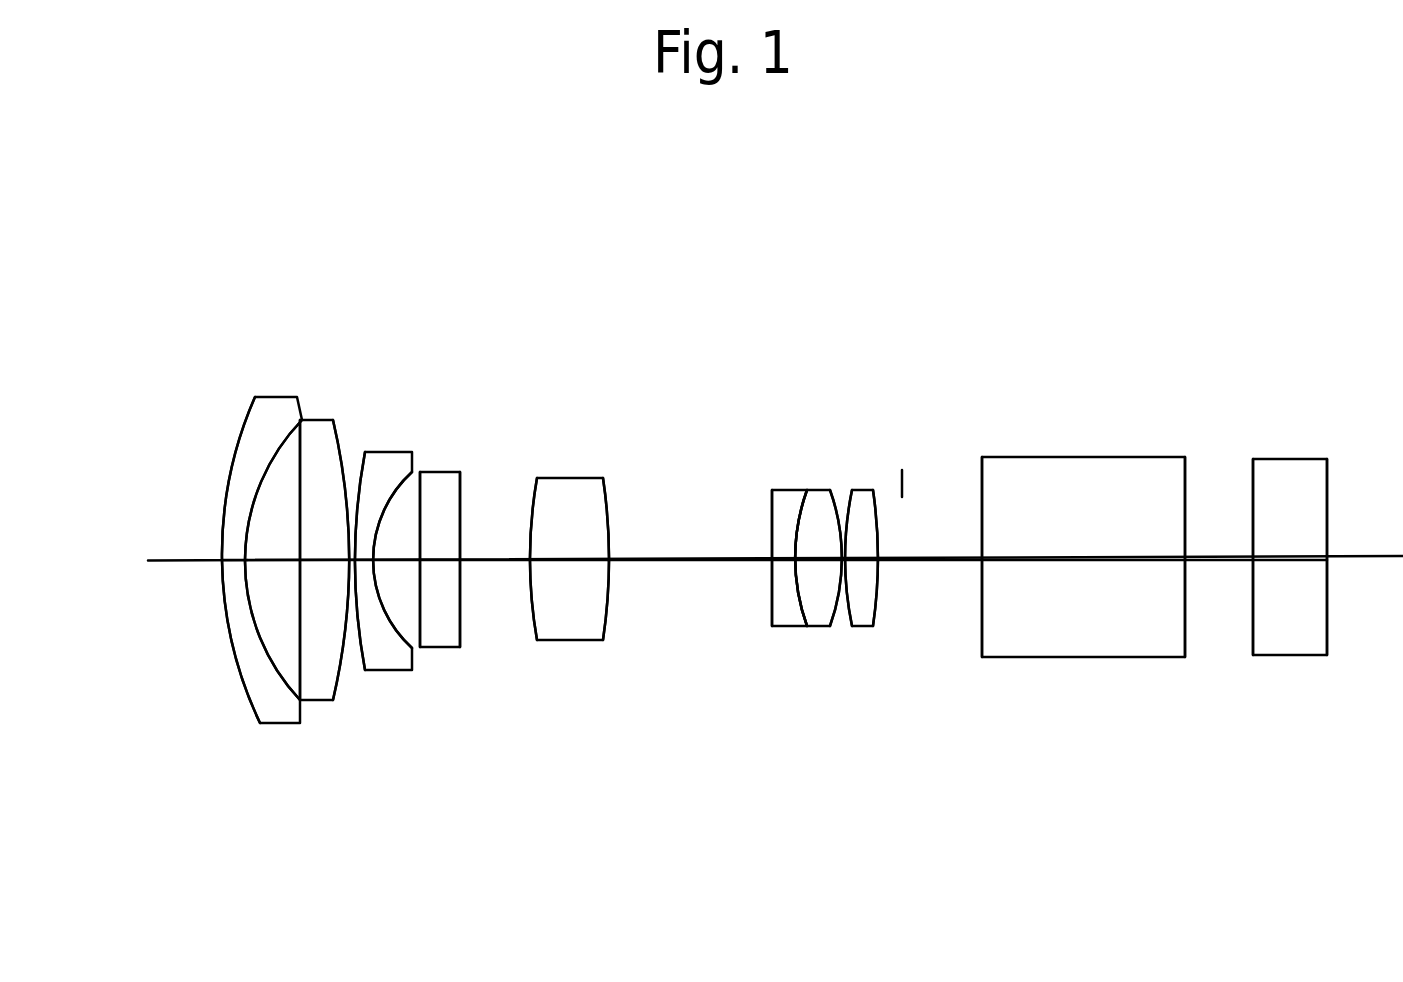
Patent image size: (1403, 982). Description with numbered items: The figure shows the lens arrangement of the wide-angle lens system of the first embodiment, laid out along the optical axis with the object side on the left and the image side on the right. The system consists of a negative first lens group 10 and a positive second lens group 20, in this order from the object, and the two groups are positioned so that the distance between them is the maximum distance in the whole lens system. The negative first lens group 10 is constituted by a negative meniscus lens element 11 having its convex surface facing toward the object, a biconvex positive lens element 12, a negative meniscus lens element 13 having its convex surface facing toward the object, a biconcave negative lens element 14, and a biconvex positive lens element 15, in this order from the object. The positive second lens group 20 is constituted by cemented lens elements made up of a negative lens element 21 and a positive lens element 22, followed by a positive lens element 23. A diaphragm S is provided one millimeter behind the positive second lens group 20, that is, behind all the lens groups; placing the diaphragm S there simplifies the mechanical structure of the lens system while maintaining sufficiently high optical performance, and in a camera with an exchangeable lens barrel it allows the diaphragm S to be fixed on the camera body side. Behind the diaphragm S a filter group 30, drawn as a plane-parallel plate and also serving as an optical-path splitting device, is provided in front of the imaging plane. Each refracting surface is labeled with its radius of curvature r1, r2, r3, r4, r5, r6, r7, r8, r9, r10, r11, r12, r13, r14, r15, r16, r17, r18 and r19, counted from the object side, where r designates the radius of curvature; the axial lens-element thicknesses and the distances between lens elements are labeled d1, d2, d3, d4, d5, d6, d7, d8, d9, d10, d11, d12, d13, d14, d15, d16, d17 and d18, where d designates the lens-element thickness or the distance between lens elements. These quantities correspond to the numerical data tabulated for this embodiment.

The negative first lens group 10 is at (670, 253).
The positive second lens group 20 is at (1075, 253).
The filter group 30 is at (1363, 242).
The negative meniscus lens element 11 is at (243, 488).
The biconvex positive lens element 12 is at (329, 532).
The negative meniscus lens element 13 is at (382, 486).
The biconcave negative lens element 14 is at (440, 537).
The biconvex positive lens element 15 is at (583, 522).
The negative lens element 21 is at (784, 535).
The positive lens element 22 is at (813, 510).
The positive lens element 23 is at (857, 533).
The diaphragm S is at (905, 490).
The radius of curvature r1 is at (255, 397).
The radius of curvature r2 is at (298, 397).
The radius of curvature r3 is at (300, 417).
The radius of curvature r4 is at (330, 422).
The radius of curvature r5 is at (363, 452).
The radius of curvature r6 is at (412, 452).
The radius of curvature r7 is at (420, 472).
The radius of curvature r8 is at (460, 472).
The radius of curvature r9 is at (537, 477).
The radius of curvature r10 is at (603, 477).
The radius of curvature r11 is at (772, 490).
The radius of curvature r12 is at (807, 490).
The radius of curvature r13 is at (830, 490).
The radius of curvature r14 is at (853, 490).
The radius of curvature r15 is at (873, 490).
The radius of curvature r16 is at (982, 457).
The radius of curvature r17 is at (1185, 457).
The radius of curvature r18 is at (1253, 459).
The radius of curvature r19 is at (1327, 459).
The lens-element thickness d1 is at (223, 560).
The distance between lens elements d2 is at (255, 560).
The lens-element thickness d3 is at (320, 560).
The distance between lens elements d4 is at (352, 560).
The lens-element thickness d5 is at (364, 560).
The distance between lens elements d6 is at (397, 560).
The lens-element thickness d7 is at (425, 560).
The distance between lens elements d8 is at (493, 560).
The lens-element thickness d9 is at (573, 560).
The distance between lens elements d10 is at (686, 560).
The lens-element thickness d11 is at (783, 560).
The lens-element thickness d12 is at (807, 560).
The distance between lens elements d13 is at (843, 560).
The lens-element thickness d14 is at (860, 560).
The distance between lens elements d15 is at (930, 560).
The lens-element thickness d16 is at (1081, 560).
The distance between lens elements d17 is at (1217, 560).
The lens-element thickness d18 is at (1286, 560).